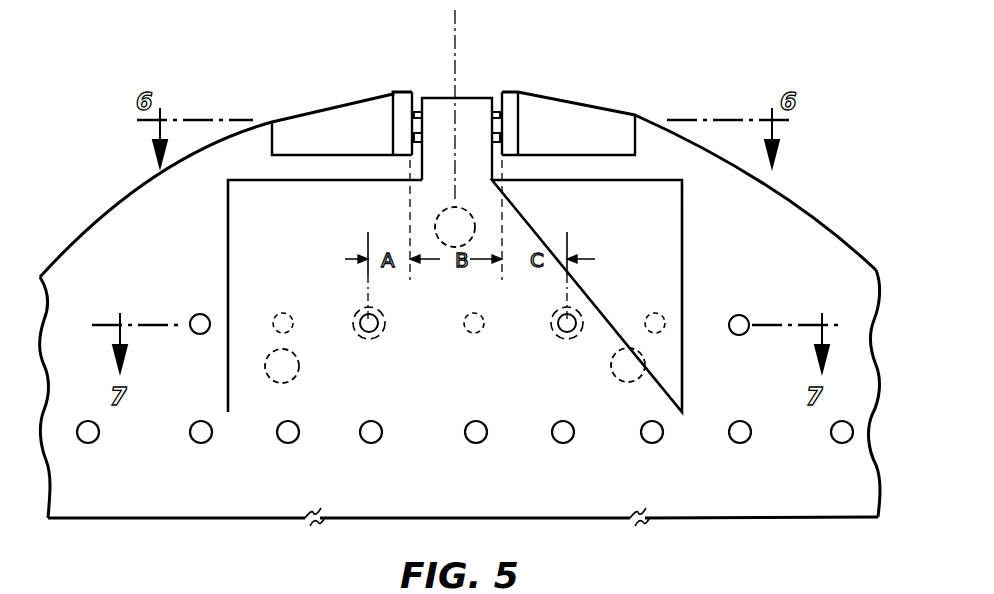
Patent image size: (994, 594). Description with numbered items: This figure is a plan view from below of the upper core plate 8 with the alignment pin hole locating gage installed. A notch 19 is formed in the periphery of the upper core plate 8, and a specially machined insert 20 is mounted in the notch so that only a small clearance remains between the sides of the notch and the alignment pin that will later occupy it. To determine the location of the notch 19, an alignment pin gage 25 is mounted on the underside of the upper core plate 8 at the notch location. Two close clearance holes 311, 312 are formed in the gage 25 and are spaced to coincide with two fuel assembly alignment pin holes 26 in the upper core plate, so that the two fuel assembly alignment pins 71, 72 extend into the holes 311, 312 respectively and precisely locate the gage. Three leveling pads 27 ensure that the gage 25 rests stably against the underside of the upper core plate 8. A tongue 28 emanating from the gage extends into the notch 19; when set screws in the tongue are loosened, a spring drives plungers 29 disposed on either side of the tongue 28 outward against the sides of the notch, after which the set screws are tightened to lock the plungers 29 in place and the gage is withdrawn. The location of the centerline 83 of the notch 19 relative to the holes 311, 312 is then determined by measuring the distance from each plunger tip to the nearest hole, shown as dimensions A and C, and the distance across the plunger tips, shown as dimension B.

The upper core plate 8 is at (822, 213).
The notch 19 is at (411, 92).
The insert 20 is at (635, 140).
The alignment pin gage 25 is at (682, 262).
The fuel assembly alignment pin holes 26 is at (739, 315).
The leveling pads 27 is at (475, 215).
The tongue 28 is at (470, 98).
The plungers 29 is at (413, 126).
The close clearance hole 311 is at (376, 333).
The close clearance hole 312 is at (560, 333).
The fuel assembly alignment pin 71 is at (360, 316).
The fuel assembly alignment pin 72 is at (576, 316).
The centerline 83 is at (455, 42).